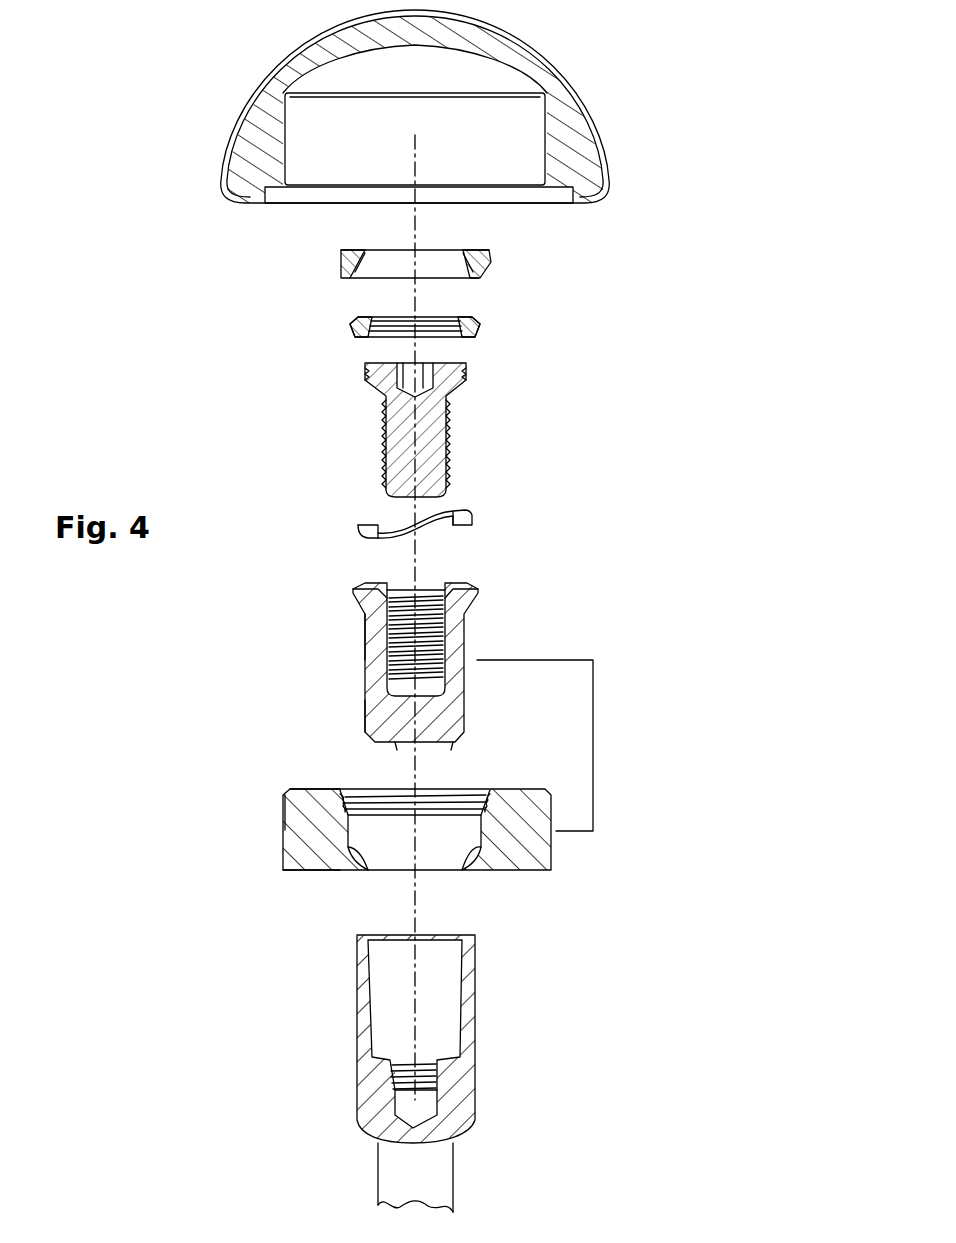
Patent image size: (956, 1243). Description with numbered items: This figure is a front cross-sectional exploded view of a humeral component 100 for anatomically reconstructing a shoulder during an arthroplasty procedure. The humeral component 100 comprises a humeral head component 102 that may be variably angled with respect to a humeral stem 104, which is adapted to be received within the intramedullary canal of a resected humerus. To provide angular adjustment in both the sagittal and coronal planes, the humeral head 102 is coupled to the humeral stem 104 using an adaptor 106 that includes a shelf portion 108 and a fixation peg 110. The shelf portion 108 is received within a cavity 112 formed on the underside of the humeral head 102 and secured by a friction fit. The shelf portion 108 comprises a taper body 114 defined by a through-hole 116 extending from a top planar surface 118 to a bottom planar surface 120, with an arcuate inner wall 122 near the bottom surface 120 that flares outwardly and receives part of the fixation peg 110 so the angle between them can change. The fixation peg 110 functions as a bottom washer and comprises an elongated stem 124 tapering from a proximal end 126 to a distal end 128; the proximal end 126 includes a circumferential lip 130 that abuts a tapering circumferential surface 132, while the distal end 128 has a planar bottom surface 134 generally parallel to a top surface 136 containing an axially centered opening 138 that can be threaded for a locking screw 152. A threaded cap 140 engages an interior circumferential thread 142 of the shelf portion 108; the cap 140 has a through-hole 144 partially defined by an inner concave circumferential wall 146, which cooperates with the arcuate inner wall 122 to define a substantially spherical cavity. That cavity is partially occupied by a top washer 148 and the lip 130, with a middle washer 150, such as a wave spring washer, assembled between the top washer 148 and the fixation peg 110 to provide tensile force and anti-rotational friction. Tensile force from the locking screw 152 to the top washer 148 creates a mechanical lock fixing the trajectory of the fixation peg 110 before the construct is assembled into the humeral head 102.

The humeral component 100 is at (98, 138).
The humeral head component 102 is at (553, 73).
The humeral stem 104 is at (476, 1032).
The adaptor 106 is at (593, 745).
The shelf portion 108 is at (283, 853).
The fixation peg 110 is at (365, 678).
The cavity 112 is at (485, 152).
The taper body 114 is at (283, 812).
The through-hole 116 is at (435, 850).
The top planar surface 118 is at (295, 789).
The bottom planar surface 120 is at (305, 870).
The arcuate inner wall 122 is at (460, 848).
The elongated stem 124 is at (365, 720).
The proximal end 126 is at (447, 595).
The distal end 128 is at (455, 750).
The circumferential lip 130 is at (475, 598).
The circumferential surface 132 is at (365, 640).
The bottom surface 134 is at (397, 748).
The top surface 136 is at (368, 584).
The axially centered opening 138 is at (425, 600).
The threaded cap 140 is at (341, 262).
The interior circumferential thread 142 is at (395, 805).
The through-hole 144 is at (385, 252).
The inner concave circumferential wall 146 is at (365, 275).
The top washer 148 is at (480, 326).
The middle washer 150 is at (358, 527).
The locking screw 152 is at (388, 430).